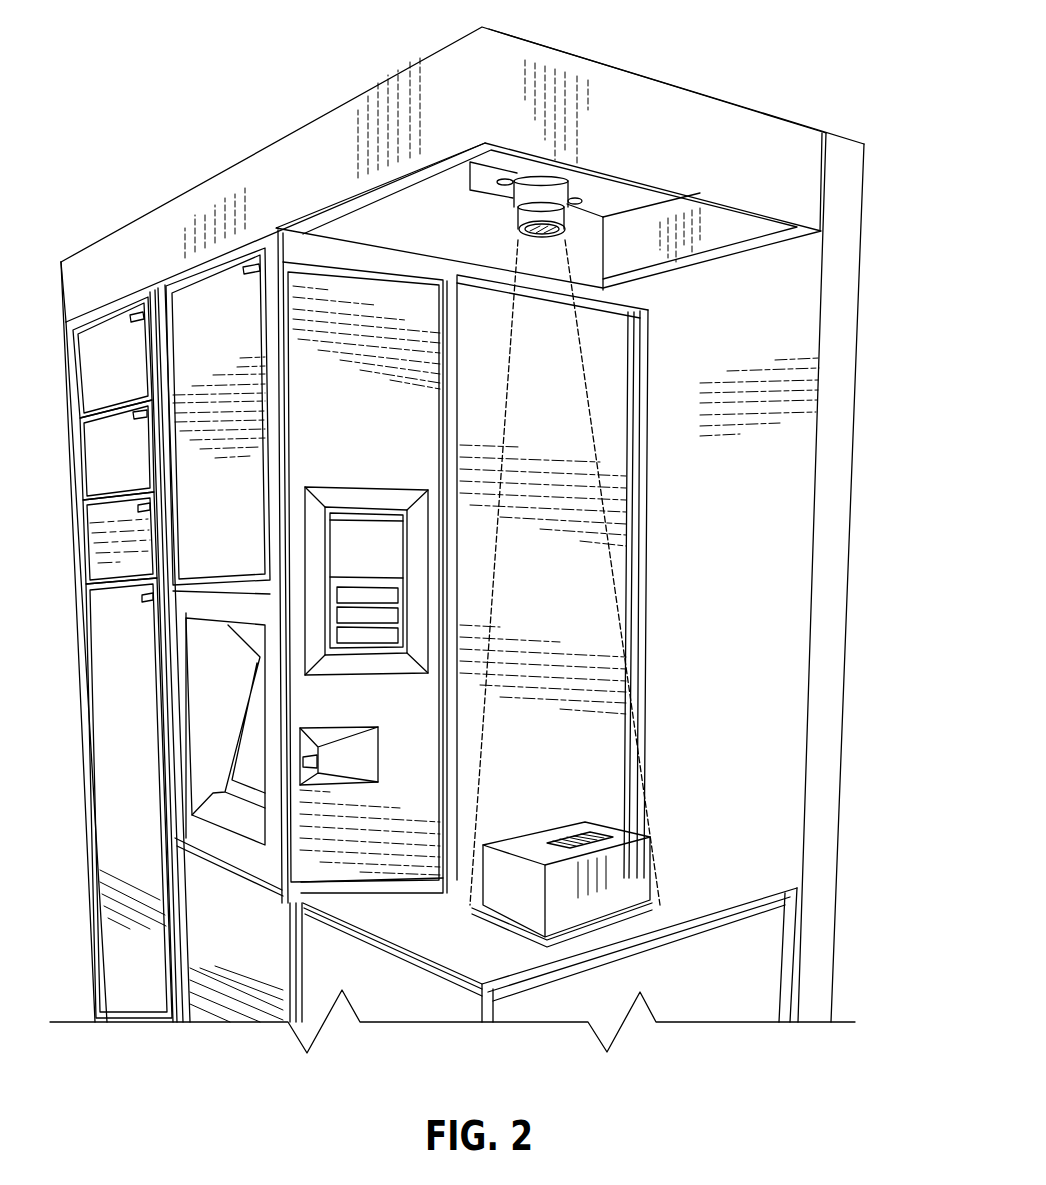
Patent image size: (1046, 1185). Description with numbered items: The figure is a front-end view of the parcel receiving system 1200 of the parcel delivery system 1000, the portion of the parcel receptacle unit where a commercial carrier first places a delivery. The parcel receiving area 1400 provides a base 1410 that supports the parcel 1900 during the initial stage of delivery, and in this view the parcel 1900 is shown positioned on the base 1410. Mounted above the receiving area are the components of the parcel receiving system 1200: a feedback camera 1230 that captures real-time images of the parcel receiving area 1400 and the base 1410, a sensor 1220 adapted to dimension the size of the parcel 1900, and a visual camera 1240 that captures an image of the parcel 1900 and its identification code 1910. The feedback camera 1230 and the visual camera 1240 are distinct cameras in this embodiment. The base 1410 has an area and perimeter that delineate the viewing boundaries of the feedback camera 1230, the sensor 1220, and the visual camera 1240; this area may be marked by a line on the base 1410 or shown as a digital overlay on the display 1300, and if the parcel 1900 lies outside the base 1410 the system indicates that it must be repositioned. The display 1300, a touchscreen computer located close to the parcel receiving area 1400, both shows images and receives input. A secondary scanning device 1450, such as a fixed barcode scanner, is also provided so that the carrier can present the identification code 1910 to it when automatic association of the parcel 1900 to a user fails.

The parcel delivery system 1000 is at (457, 540).
The parcel receiving system 1200 is at (486, 227).
The feedback camera 1230 is at (503, 179).
The visual camera 1240 is at (557, 180).
The sensor 1220 is at (578, 200).
The display 1300 is at (330, 560).
The secondary scanning device 1450 is at (316, 777).
The parcel receiving area 1400 is at (672, 737).
The parcel 1900 is at (628, 874).
The identification code 1910 is at (587, 833).
The base 1410 is at (475, 938).